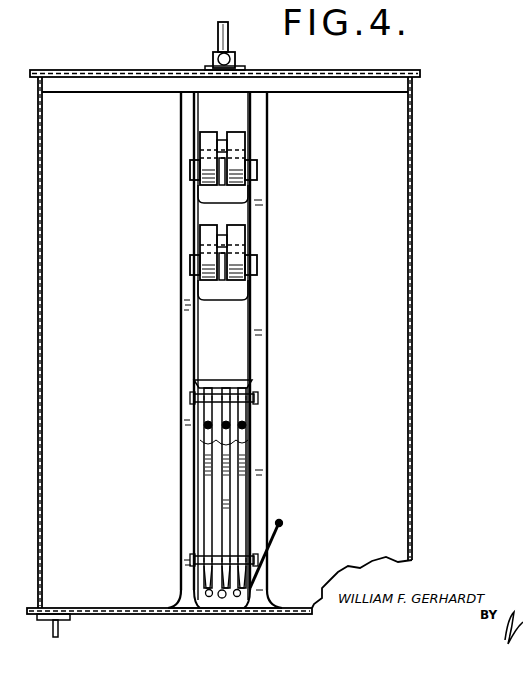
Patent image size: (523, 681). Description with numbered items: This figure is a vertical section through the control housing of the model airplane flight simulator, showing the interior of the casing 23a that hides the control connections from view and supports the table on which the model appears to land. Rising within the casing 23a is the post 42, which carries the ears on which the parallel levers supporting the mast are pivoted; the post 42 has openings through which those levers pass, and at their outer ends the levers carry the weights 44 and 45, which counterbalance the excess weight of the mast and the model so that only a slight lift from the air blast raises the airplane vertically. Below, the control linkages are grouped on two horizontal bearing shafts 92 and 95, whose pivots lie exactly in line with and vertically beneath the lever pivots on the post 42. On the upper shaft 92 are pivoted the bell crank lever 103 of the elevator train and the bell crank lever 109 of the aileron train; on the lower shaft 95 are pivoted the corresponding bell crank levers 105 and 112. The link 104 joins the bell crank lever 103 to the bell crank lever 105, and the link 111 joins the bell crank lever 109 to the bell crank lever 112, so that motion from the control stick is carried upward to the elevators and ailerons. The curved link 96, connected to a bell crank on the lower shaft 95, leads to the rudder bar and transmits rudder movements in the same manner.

The casing 23a is at (412, 268).
The post 42 is at (268, 326).
The weight 44 is at (206, 146).
The weight 45 is at (206, 241).
The horizontal bearing shaft 92 is at (258, 398).
The horizontal bearing shaft 95 is at (196, 560).
The curved link 96 is at (283, 537).
The bell crank lever 103 is at (255, 380).
The link 104 is at (243, 503).
The bell crank lever 105 is at (219, 597).
The bell crank lever 109 is at (206, 392).
The link 111 is at (212, 470).
The bell crank lever 112 is at (190, 586).